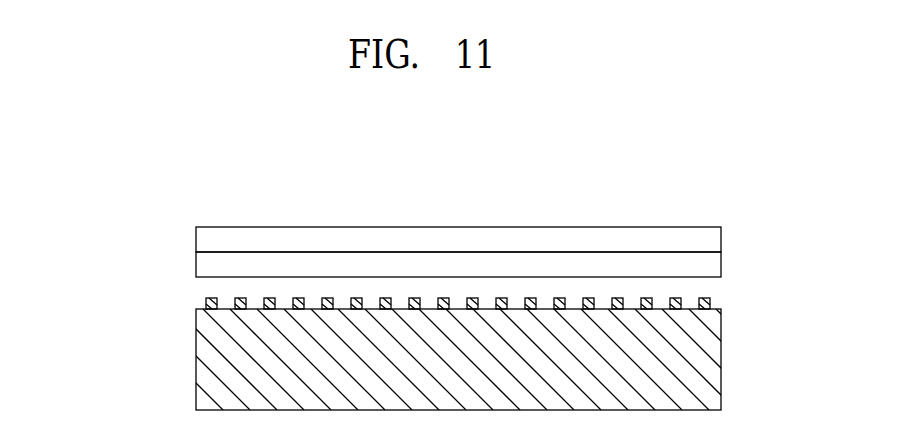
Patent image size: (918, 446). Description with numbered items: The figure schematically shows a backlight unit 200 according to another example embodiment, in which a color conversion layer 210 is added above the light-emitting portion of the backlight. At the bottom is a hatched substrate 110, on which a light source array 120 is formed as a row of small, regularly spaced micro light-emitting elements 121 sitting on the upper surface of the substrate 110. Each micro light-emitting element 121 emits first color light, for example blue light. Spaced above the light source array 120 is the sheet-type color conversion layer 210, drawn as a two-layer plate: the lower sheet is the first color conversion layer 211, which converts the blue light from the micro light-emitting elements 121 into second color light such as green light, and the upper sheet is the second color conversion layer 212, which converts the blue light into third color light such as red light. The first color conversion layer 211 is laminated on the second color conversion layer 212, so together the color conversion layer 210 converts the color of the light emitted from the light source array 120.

The backlight unit 200 is at (392, 200).
The color conversion layer 210 is at (392, 252).
The second color conversion layer 212 is at (195, 232).
The first color conversion layer 211 is at (195, 262).
The light source array 120 is at (440, 305).
The micro light-emitting element 121 is at (712, 303).
The substrate 110 is at (195, 358).